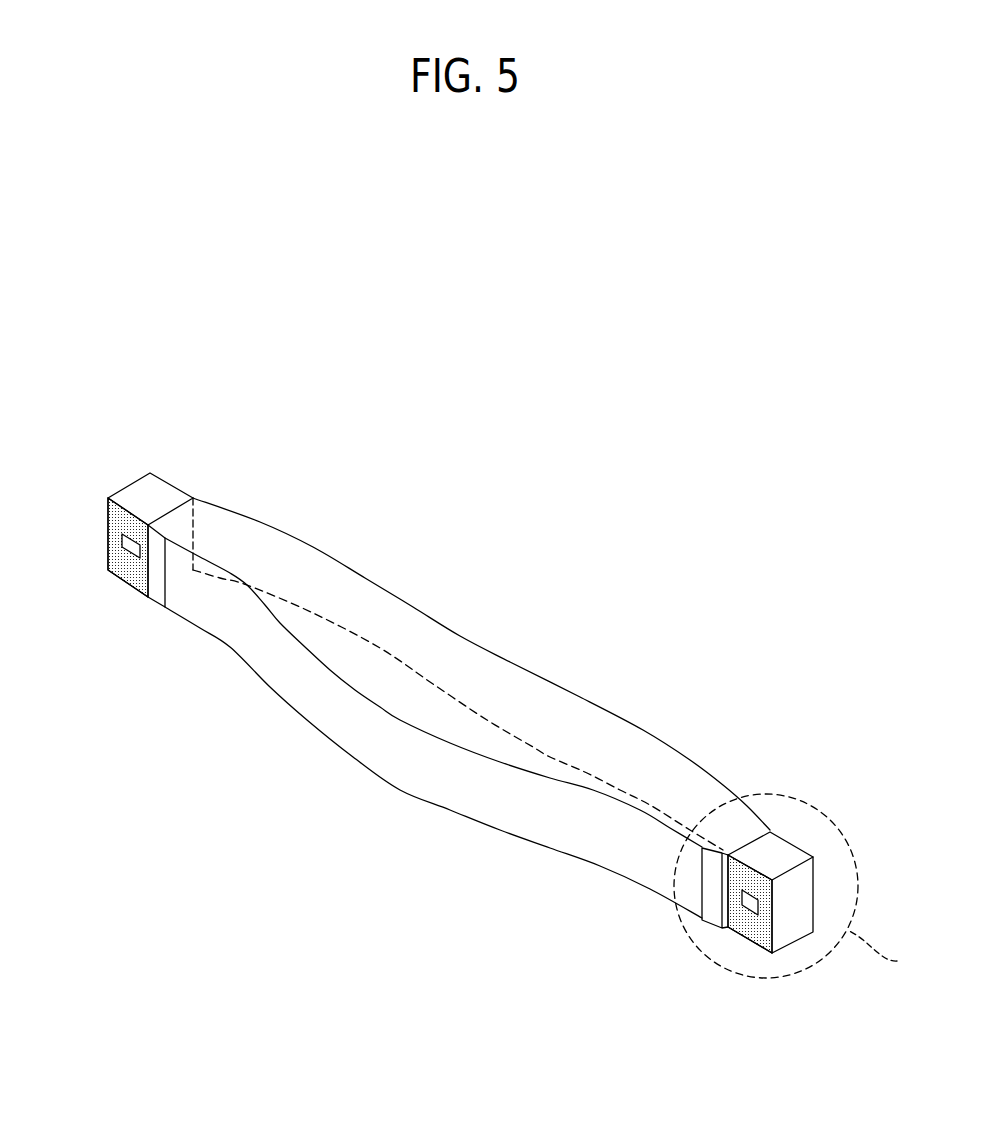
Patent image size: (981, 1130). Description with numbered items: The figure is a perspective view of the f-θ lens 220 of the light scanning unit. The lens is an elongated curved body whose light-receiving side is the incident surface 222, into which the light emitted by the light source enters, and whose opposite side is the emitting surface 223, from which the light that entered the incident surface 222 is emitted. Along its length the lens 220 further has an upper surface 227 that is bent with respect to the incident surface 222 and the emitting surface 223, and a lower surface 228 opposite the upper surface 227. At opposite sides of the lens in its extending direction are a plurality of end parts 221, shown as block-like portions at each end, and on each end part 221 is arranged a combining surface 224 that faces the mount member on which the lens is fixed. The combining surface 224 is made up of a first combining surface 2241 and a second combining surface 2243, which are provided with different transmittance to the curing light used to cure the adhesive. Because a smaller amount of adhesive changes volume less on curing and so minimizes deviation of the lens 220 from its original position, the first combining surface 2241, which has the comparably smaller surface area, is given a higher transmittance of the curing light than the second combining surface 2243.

The f-θ lens 220 is at (706, 632).
The end part 221 is at (140, 492).
The incident surface 222 is at (364, 746).
The emitting surface 223 is at (498, 691).
The combining surface 224 is at (117, 648).
The first combining surface 2241 is at (127, 550).
The second combining surface 2243 is at (113, 552).
The upper surface 227 is at (398, 616).
The lower surface 228 is at (544, 816).